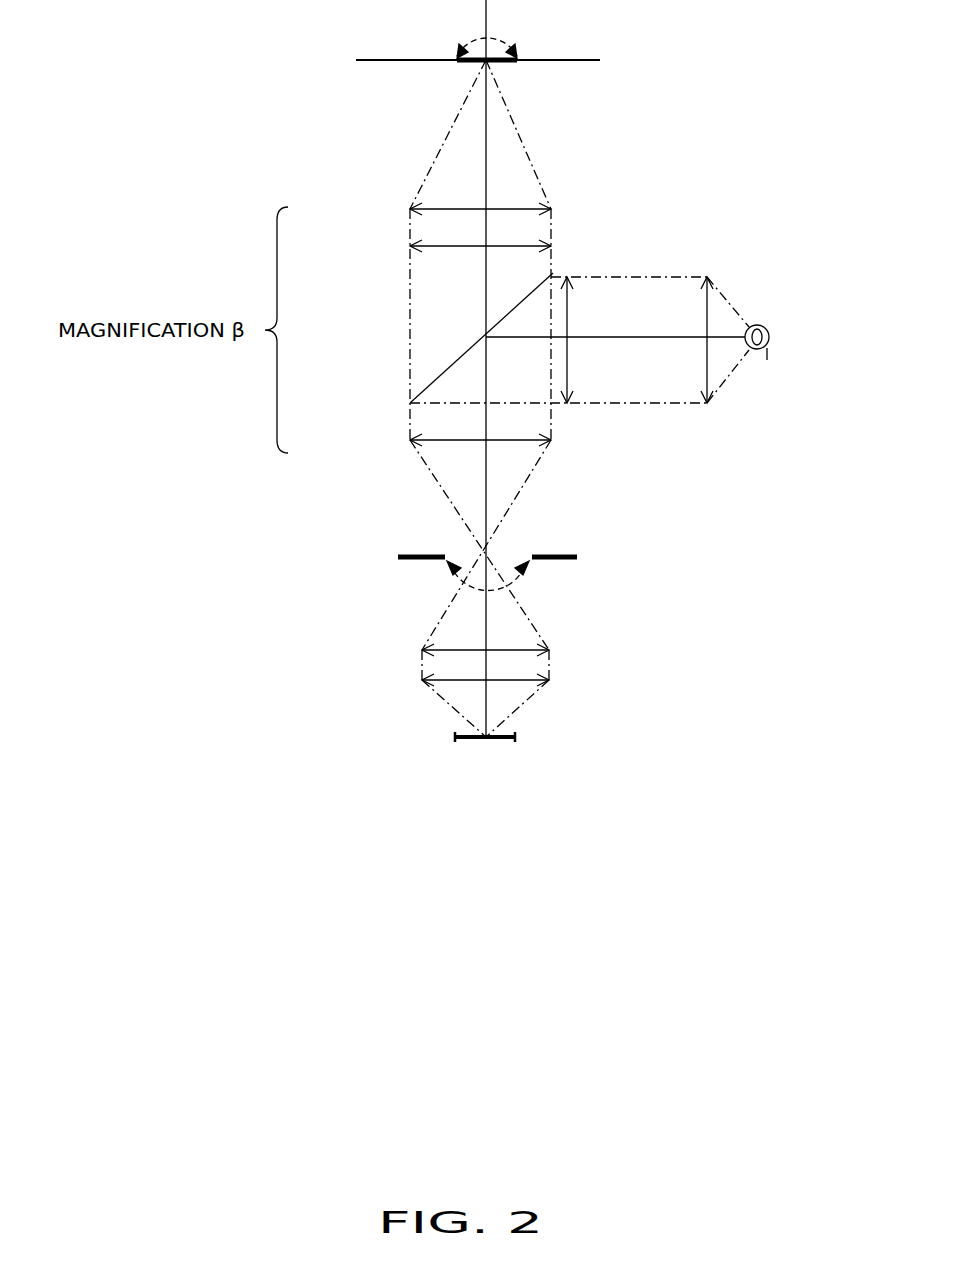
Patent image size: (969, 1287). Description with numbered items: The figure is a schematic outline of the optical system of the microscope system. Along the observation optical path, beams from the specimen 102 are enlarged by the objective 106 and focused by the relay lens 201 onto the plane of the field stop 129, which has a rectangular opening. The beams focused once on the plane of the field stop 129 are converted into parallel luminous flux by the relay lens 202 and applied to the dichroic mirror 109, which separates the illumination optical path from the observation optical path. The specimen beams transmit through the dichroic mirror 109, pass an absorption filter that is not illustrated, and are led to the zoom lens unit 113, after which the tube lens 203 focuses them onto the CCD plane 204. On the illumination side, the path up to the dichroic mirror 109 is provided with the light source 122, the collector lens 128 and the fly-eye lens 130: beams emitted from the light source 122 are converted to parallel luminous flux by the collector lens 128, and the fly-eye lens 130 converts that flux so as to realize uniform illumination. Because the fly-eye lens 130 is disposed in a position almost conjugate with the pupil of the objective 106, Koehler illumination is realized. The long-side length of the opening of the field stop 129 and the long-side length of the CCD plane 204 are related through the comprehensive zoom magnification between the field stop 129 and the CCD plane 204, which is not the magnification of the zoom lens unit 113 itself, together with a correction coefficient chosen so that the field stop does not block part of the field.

The specimen 102 is at (447, 739).
The objective 106 is at (464, 682).
The dichroic mirror 109 is at (413, 410).
The zoom lens unit 113 is at (455, 247).
The light source 122 is at (772, 348).
The collector lens 128 is at (708, 375).
The field stop 129 is at (463, 573).
The fly-eye lens 130 is at (568, 375).
The relay lens 201 is at (464, 652).
The relay lens 202 is at (448, 440).
The tube lens 203 is at (455, 209).
The CCD plane 204 is at (445, 49).